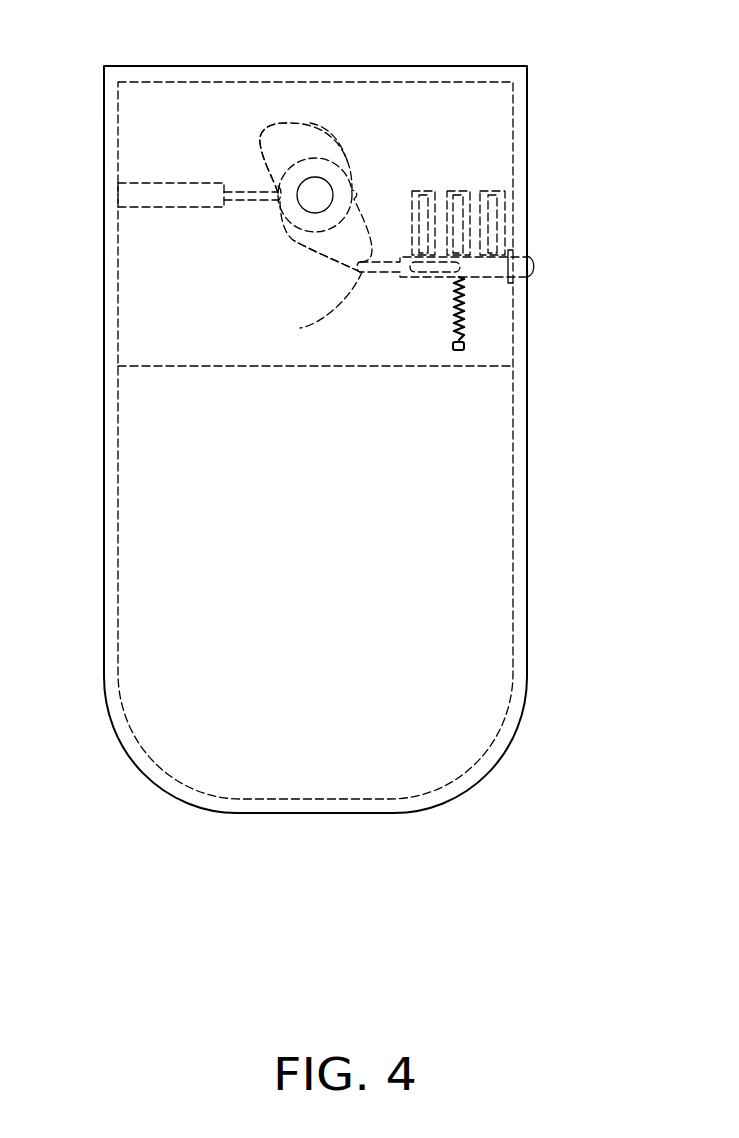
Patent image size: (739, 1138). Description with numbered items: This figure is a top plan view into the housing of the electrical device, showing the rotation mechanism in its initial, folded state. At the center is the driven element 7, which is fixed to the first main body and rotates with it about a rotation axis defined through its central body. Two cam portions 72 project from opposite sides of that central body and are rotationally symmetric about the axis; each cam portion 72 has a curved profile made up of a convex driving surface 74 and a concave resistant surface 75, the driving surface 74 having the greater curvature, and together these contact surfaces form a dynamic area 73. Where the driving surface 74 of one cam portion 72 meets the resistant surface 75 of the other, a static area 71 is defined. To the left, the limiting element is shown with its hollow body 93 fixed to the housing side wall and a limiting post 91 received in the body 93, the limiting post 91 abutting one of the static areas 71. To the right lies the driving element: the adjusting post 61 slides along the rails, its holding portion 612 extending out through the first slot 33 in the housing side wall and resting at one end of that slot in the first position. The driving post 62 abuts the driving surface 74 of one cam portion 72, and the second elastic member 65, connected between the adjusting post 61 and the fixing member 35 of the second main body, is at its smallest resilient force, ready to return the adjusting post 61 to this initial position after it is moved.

The driven element 7 is at (280, 213).
The static areas 71 is at (357, 193).
The cam portions 72 is at (297, 157).
The dynamic area 73 is at (259, 143).
The driving surface 74 is at (325, 133).
The resistant surface 75 is at (278, 190).
The limiting post 91 is at (277, 192).
The body 93 is at (157, 190).
The driving post 62 is at (300, 328).
The first slot 33 is at (520, 236).
The adjusting post 61 is at (477, 280).
The holding portion 612 is at (533, 262).
The second elastic member 65 is at (465, 322).
The fixing member 35 is at (463, 345).